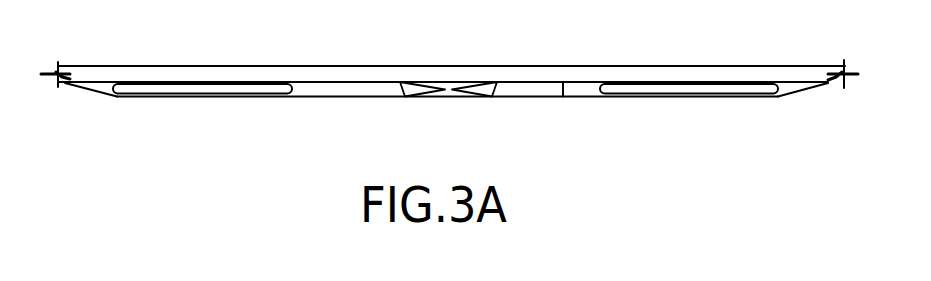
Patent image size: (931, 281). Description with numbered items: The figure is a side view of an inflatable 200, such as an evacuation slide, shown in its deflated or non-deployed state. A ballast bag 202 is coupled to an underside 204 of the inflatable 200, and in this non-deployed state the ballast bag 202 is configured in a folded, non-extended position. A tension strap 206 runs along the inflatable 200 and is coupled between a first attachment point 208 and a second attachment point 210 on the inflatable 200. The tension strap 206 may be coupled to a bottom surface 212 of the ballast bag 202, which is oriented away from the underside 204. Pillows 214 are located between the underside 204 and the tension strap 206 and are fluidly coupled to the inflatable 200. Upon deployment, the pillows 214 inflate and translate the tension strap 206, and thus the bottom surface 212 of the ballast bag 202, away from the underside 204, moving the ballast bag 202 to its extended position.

The inflatable 200 is at (365, 72).
The ballast bag 202 is at (448, 88).
The underside 204 is at (564, 96).
The tension strap 206 is at (358, 97).
The first attachment point 208 is at (833, 83).
The second attachment point 210 is at (64, 85).
The bottom surface 212 is at (432, 97).
The pillows 214 is at (200, 95).